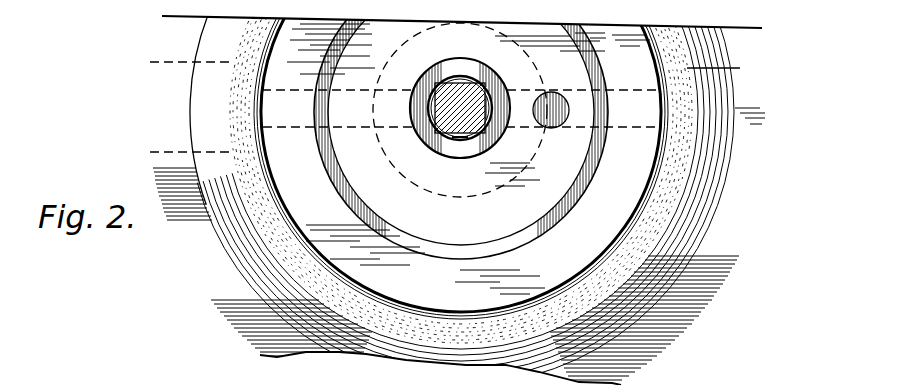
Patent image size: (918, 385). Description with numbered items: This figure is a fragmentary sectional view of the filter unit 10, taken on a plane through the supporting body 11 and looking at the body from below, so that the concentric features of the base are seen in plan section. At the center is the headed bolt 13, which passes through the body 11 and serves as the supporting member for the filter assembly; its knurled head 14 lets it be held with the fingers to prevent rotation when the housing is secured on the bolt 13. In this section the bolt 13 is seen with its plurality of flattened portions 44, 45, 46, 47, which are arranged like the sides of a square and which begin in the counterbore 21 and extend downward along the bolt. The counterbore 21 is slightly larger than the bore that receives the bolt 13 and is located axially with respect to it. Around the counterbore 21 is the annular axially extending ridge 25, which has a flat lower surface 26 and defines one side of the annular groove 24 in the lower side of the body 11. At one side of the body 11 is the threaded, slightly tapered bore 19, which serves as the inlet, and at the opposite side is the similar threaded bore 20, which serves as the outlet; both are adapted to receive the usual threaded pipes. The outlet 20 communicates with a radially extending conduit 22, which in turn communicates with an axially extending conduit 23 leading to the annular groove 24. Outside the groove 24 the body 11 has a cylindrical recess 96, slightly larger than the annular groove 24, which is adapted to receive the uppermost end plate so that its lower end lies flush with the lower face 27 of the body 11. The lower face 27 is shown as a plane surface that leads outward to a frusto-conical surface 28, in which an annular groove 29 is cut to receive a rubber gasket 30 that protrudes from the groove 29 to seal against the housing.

The filter unit 10 is at (645, 315).
The supporting body 11 is at (698, 318).
The headed bolt 13 is at (452, 142).
The knurled head 14 is at (481, 199).
The threaded bore 19 is at (144, 62).
The threaded bore 20 is at (291, 122).
The counterbore 21 is at (445, 75).
The radially extending conduit 22 is at (625, 91).
The axially extending conduit 23 is at (546, 92).
The annular groove 24 is at (546, 233).
The annular axially extending ridge 25 is at (492, 49).
The flat lower surface 26 is at (538, 203).
The lower face 27 is at (480, 270).
The frusto-conical surface 28 is at (674, 245).
The annular groove 29 is at (692, 171).
The rubber gasket 30 is at (656, 214).
The flattened portion 44 is at (458, 76).
The flattened portion 45 is at (434, 107).
The flattened portion 46 is at (463, 143).
The flattened portion 47 is at (487, 115).
The cylindrical recess 96 is at (596, 151).